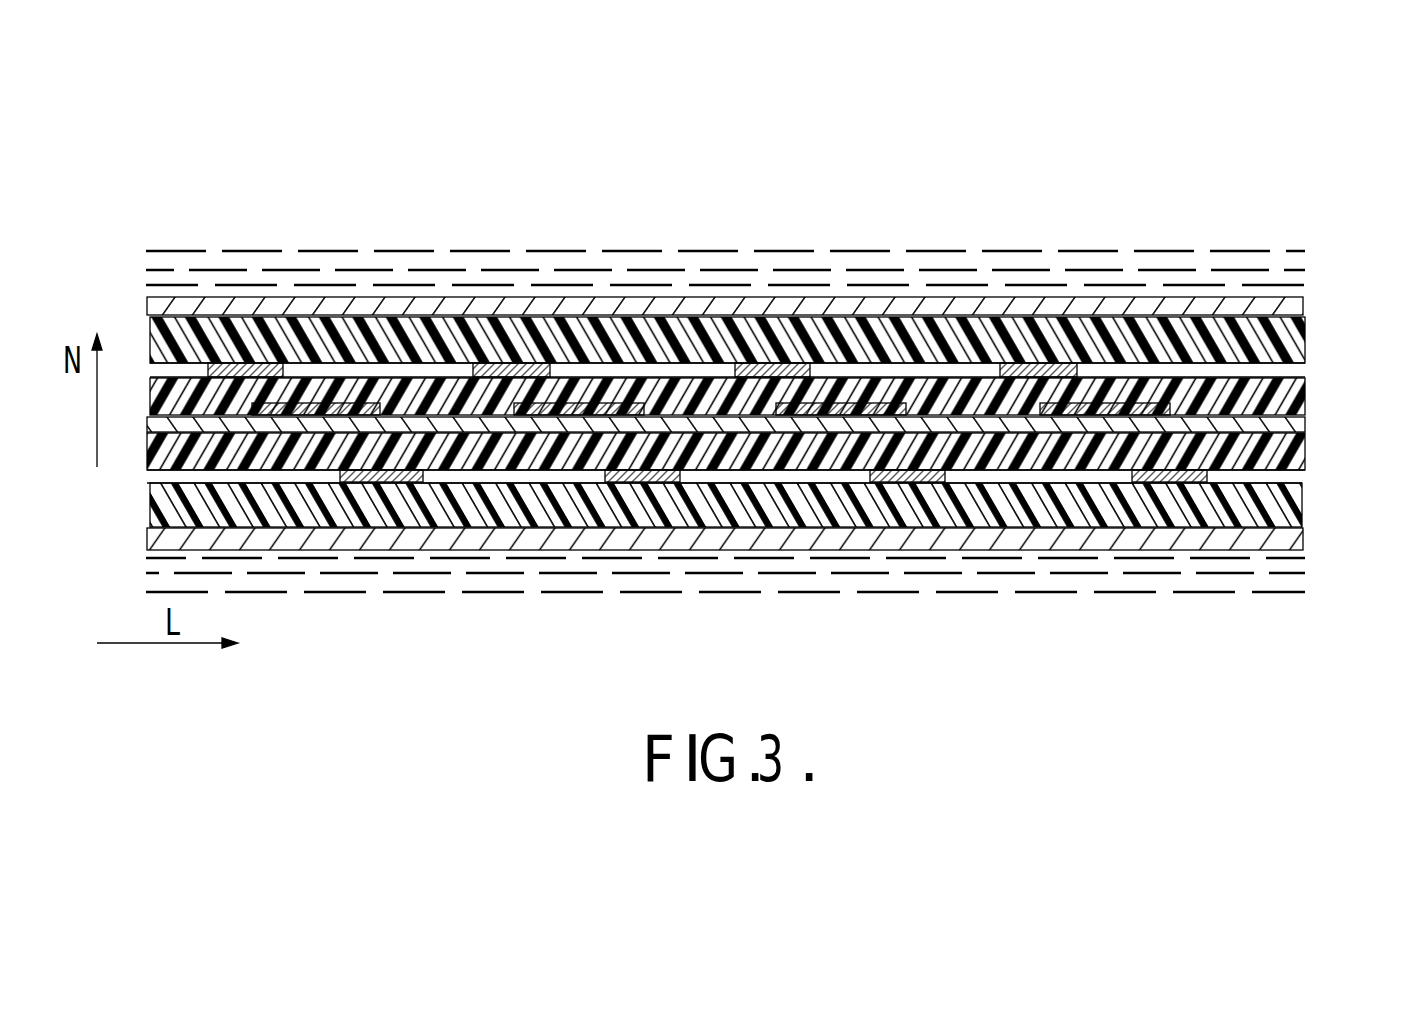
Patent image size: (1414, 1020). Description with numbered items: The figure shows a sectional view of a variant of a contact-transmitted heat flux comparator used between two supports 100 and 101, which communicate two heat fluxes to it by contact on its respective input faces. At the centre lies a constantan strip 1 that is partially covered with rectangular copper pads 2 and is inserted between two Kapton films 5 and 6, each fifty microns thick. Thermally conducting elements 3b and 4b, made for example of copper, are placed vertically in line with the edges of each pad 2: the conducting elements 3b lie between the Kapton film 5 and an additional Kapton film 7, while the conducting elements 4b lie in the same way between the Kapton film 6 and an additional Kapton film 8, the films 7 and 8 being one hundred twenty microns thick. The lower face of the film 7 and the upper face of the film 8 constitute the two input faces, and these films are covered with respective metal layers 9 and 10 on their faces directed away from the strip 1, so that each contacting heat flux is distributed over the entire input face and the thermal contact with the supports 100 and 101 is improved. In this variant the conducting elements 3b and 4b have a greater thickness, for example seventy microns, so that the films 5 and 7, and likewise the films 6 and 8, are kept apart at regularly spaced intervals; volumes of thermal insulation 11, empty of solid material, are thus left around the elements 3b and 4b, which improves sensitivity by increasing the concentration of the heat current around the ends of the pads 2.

The constantan strip 1 is at (1260, 423).
The copper pad 2 is at (725, 222).
The thermally conducting element 3b is at (408, 478).
The thermally conducting element 4b is at (797, 367).
The Kapton film 5 is at (1250, 452).
The Kapton film 6 is at (1263, 397).
The additional Kapton film 7 is at (1262, 503).
The additional Kapton film 8 is at (1257, 342).
The metal layer 9 is at (1222, 537).
The metal layer 10 is at (1252, 308).
The volume of thermal insulation 11 is at (565, 370).
The support 100 is at (1087, 280).
The support 101 is at (1073, 601).